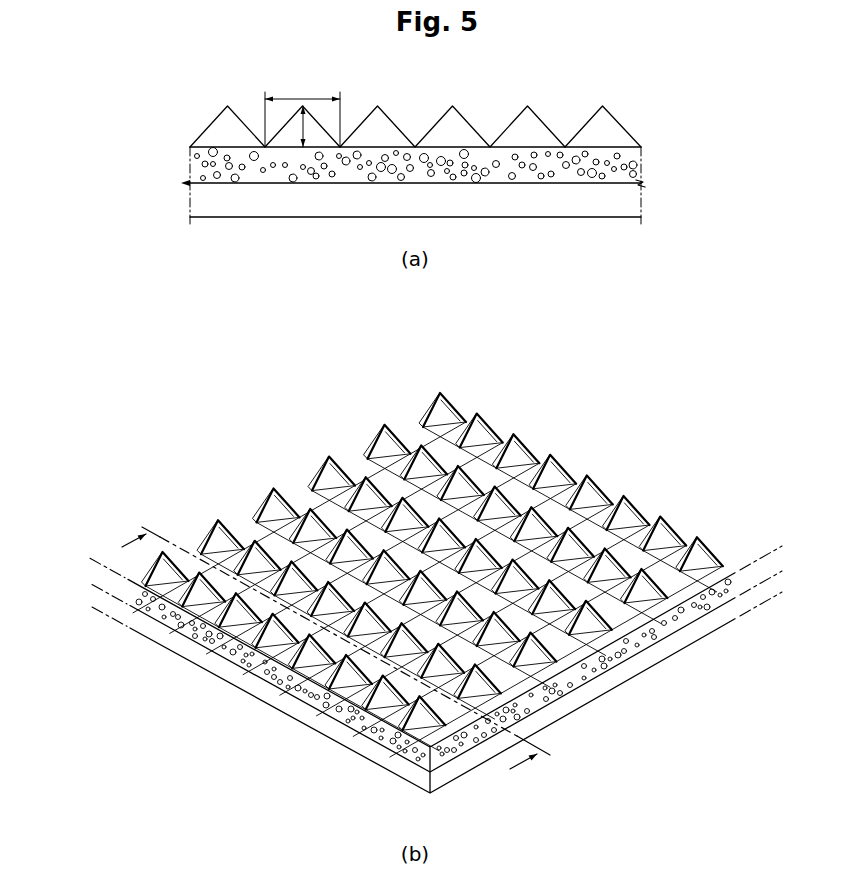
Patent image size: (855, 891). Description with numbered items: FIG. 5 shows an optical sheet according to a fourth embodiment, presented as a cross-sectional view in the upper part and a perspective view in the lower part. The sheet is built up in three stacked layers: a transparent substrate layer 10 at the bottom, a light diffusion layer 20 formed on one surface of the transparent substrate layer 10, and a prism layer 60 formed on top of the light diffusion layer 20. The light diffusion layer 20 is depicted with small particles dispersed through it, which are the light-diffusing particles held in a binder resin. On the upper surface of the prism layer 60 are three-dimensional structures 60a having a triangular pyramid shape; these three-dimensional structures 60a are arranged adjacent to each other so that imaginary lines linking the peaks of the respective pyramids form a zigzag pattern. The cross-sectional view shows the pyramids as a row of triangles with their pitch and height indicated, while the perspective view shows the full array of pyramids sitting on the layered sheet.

The transparent substrate layer 10 is at (640, 203).
The light diffusion layer 20 is at (640, 168).
The prism layer 60 is at (648, 128).
The 3D structure 60a is at (613, 118).